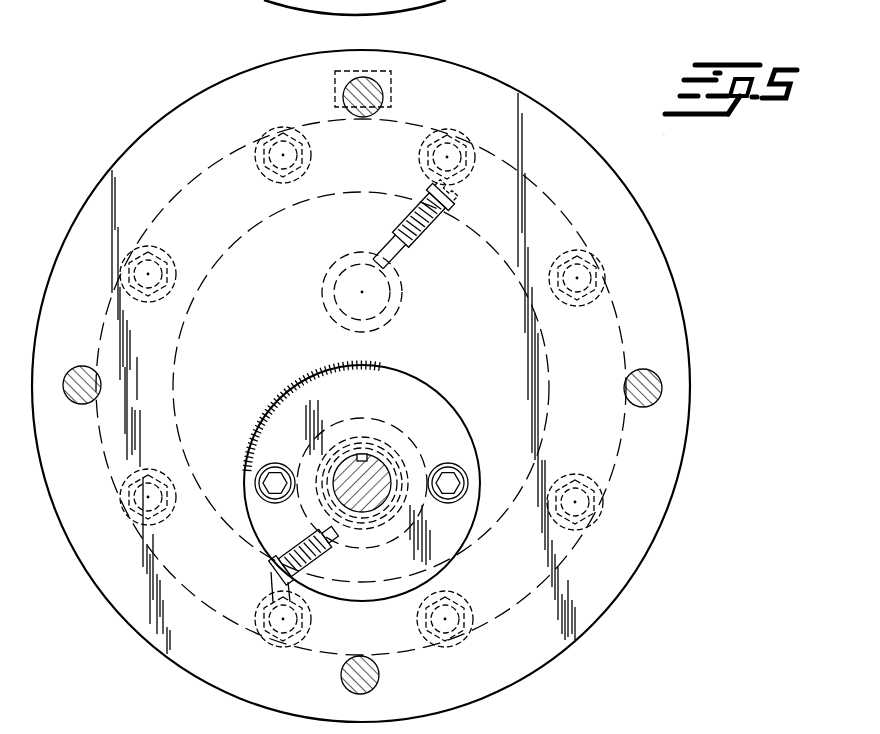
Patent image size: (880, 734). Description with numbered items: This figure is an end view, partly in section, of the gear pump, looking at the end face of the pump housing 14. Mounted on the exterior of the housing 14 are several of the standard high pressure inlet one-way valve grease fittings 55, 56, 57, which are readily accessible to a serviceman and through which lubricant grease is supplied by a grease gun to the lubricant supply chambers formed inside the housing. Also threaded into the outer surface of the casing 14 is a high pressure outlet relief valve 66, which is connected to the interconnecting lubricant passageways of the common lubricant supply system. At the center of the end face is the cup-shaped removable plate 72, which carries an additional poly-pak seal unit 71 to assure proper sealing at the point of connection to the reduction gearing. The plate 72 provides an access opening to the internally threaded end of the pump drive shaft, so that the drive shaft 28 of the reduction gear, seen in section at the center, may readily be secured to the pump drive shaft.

The pump housing 14 is at (504, 80).
The high pressure outlet relief valve 66 is at (335, 87).
The high pressure inlet one-way valve grease fitting 55 is at (452, 194).
The high pressure inlet one-way valve grease fitting 56 is at (268, 578).
The high pressure inlet one-way valve grease fitting 57 is at (397, 301).
The cup-shaped removable plate 72 is at (304, 376).
The drive shaft 28 is at (384, 468).
The poly-pak seal unit 71 is at (363, 537).